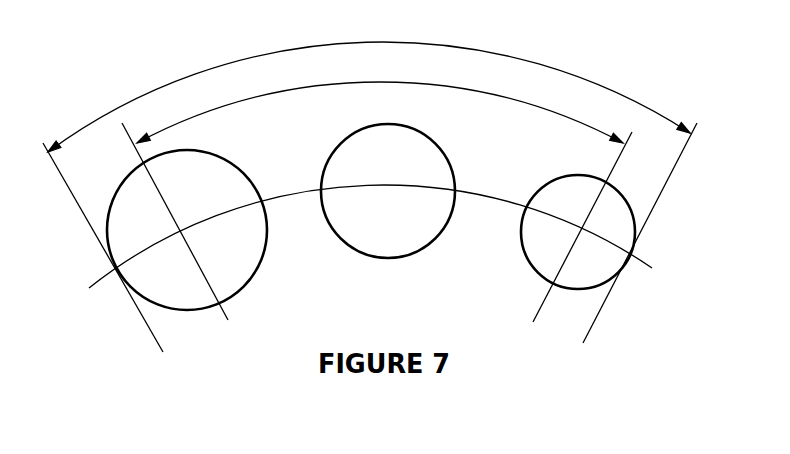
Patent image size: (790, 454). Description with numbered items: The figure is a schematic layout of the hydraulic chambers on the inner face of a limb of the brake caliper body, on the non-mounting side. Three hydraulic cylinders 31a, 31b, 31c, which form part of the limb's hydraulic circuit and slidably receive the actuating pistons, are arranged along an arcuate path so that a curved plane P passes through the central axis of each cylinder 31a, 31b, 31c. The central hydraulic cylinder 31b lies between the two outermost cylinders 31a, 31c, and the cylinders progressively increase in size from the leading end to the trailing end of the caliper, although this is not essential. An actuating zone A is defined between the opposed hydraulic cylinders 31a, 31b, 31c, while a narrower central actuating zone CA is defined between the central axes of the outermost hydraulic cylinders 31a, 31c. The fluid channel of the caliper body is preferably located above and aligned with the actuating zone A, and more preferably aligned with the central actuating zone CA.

The actuating zone A is at (369, 79).
The central actuating zone CA is at (380, 97).
The curved plane P is at (640, 259).
The hydraulic cylinder 31a is at (580, 174).
The central hydraulic cylinder 31b is at (347, 138).
The hydraulic cylinder 31c is at (247, 277).